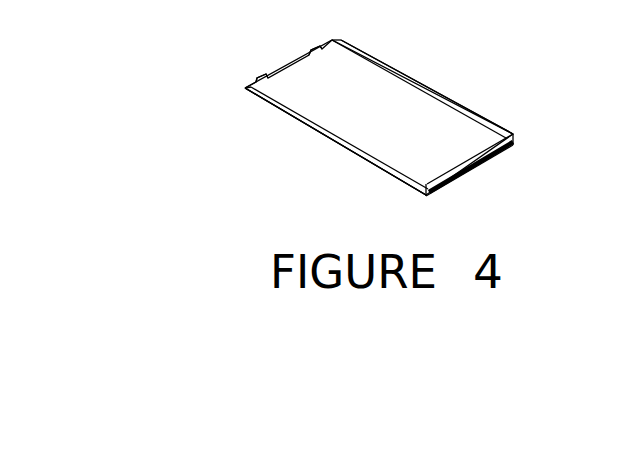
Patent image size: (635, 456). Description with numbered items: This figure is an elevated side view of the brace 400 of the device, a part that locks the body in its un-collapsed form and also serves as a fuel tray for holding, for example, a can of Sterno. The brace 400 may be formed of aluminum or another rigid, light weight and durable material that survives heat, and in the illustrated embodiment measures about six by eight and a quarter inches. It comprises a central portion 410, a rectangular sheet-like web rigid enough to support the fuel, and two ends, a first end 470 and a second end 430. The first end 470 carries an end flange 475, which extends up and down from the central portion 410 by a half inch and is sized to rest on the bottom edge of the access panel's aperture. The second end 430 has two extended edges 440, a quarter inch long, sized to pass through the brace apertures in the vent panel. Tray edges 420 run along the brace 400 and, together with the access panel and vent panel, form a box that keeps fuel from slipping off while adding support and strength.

The brace 400 is at (379, 131).
The central portion 410 is at (379, 87).
The tray edges 420 is at (442, 87).
The second end 430 is at (244, 88).
The extended edges 440 is at (316, 47).
The first end 470 is at (363, 123).
The end flange 475 is at (512, 139).